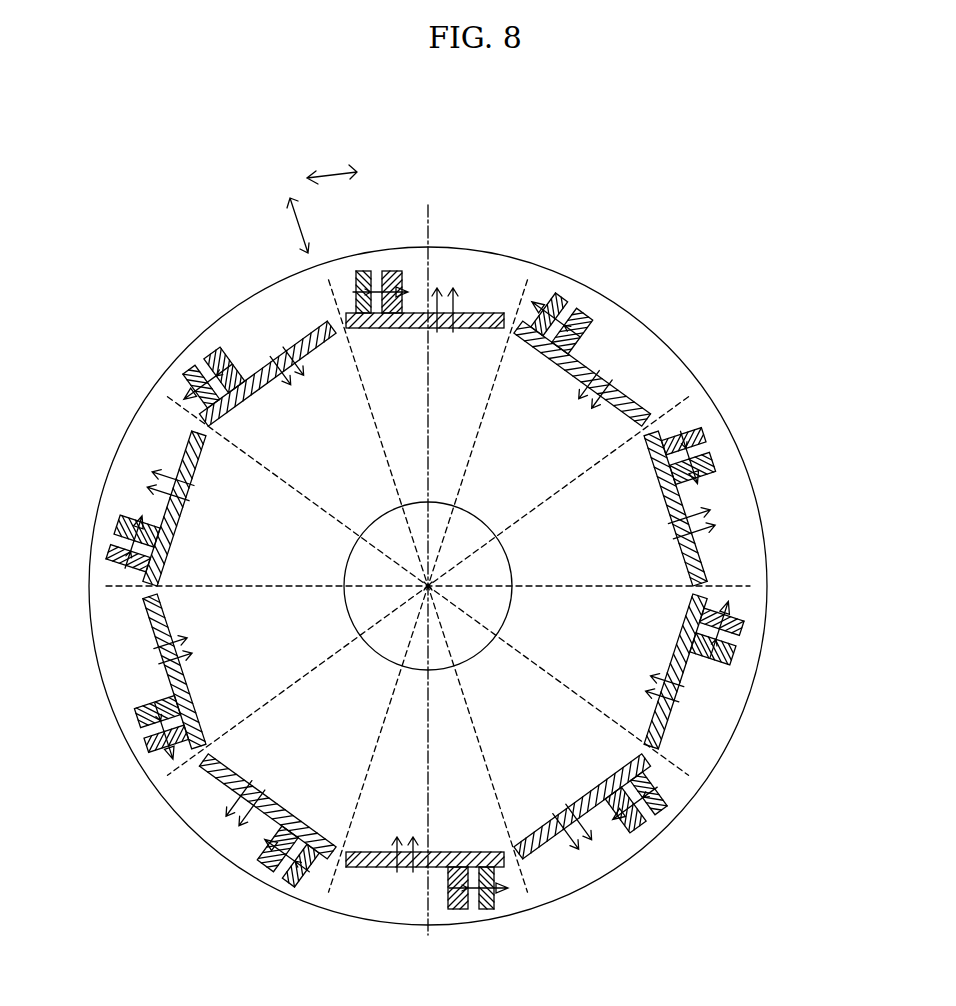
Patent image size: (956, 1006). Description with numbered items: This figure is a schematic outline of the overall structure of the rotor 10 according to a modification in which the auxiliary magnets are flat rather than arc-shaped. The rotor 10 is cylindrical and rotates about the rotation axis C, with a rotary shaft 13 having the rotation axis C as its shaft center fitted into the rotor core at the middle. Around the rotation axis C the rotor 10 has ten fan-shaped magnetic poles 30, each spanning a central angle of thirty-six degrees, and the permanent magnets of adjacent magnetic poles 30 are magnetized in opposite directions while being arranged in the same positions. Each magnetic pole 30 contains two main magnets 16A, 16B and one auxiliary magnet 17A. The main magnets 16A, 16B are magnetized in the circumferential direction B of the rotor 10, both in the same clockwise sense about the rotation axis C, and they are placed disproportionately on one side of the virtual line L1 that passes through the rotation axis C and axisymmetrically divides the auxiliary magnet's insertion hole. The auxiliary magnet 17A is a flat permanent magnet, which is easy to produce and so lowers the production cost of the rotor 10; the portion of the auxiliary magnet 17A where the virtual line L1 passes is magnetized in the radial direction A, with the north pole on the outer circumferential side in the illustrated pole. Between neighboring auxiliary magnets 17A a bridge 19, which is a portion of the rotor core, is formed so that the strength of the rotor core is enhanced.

The rotor 10 is at (663, 223).
The rotary shaft 13 is at (468, 645).
The main magnet 16A is at (392, 271).
The main magnet 16B is at (364, 271).
The auxiliary magnet 17A is at (405, 328).
The bridge 19 is at (501, 328).
The magnetic pole 30 is at (446, 248).
The virtual line L1 is at (430, 470).
The rotation axis C is at (428, 586).
The radial direction A is at (291, 225).
The circumferential direction B is at (332, 163).